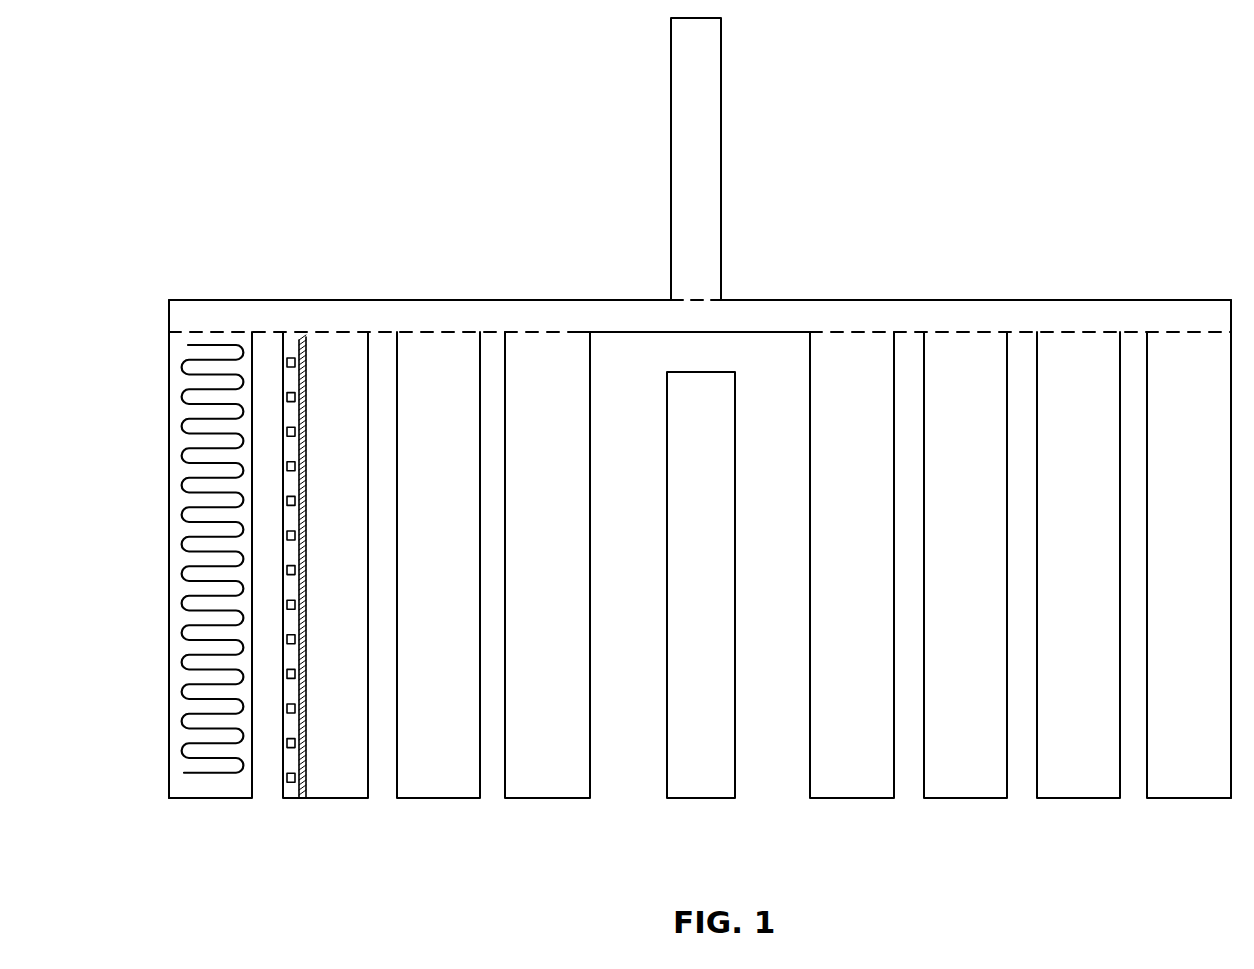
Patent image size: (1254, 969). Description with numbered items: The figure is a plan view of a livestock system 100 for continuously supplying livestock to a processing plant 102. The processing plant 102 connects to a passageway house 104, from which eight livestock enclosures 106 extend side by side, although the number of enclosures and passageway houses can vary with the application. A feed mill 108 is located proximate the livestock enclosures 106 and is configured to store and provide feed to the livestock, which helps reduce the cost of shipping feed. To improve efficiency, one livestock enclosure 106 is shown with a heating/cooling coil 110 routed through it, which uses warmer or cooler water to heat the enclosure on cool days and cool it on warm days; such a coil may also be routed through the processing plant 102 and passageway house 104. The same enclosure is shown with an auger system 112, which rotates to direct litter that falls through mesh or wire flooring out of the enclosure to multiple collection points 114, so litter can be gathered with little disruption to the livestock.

The livestock system 100 is at (393, 88).
The processing plant 102 is at (721, 148).
The passageway house 104 is at (433, 300).
The livestock enclosure 106 is at (190, 798).
The feed mill 108 is at (702, 798).
The heating/cooling coil 110 is at (169, 661).
The auger system 112 is at (303, 798).
The collection point 114 is at (289, 798).